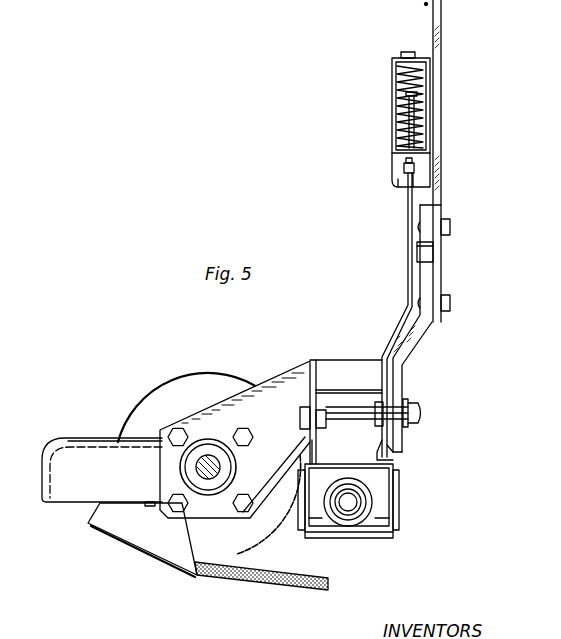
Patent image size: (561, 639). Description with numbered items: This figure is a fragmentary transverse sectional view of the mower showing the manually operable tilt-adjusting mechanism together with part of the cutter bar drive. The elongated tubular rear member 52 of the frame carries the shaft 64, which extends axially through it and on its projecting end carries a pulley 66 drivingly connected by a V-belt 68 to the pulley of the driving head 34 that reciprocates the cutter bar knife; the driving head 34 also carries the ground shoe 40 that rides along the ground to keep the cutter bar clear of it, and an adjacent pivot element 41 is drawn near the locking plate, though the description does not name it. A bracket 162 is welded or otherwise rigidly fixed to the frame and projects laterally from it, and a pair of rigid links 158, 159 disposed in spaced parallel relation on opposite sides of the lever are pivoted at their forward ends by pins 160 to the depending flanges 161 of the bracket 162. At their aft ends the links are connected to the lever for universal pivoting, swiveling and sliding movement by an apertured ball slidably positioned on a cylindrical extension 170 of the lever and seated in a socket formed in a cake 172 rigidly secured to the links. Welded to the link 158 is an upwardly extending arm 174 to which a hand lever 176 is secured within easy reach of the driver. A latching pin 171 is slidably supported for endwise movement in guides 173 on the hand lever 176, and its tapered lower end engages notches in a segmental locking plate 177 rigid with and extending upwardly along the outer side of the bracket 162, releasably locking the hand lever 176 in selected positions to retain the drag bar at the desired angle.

The hand lever 176 is at (441, 5).
The guides 173 is at (430, 80).
The latching pin 171 is at (405, 117).
The pivot pin 41 is at (428, 172).
The ground shoe 40 is at (396, 178).
The segmental locking plate 177 is at (409, 231).
The arm 174 is at (414, 349).
The bracket 162 is at (291, 368).
The depending flanges 161 is at (318, 393).
The pins 160 is at (320, 424).
The rigid link 159 is at (318, 460).
The rigid link 158 is at (377, 458).
The cake 172 is at (383, 536).
The cylindrical extension 170 is at (345, 507).
The driving head 34 is at (152, 395).
The pulley 66 is at (268, 536).
The shaft 64 is at (205, 458).
The tubular rear member 52 is at (176, 466).
The V-belt 68 is at (278, 588).